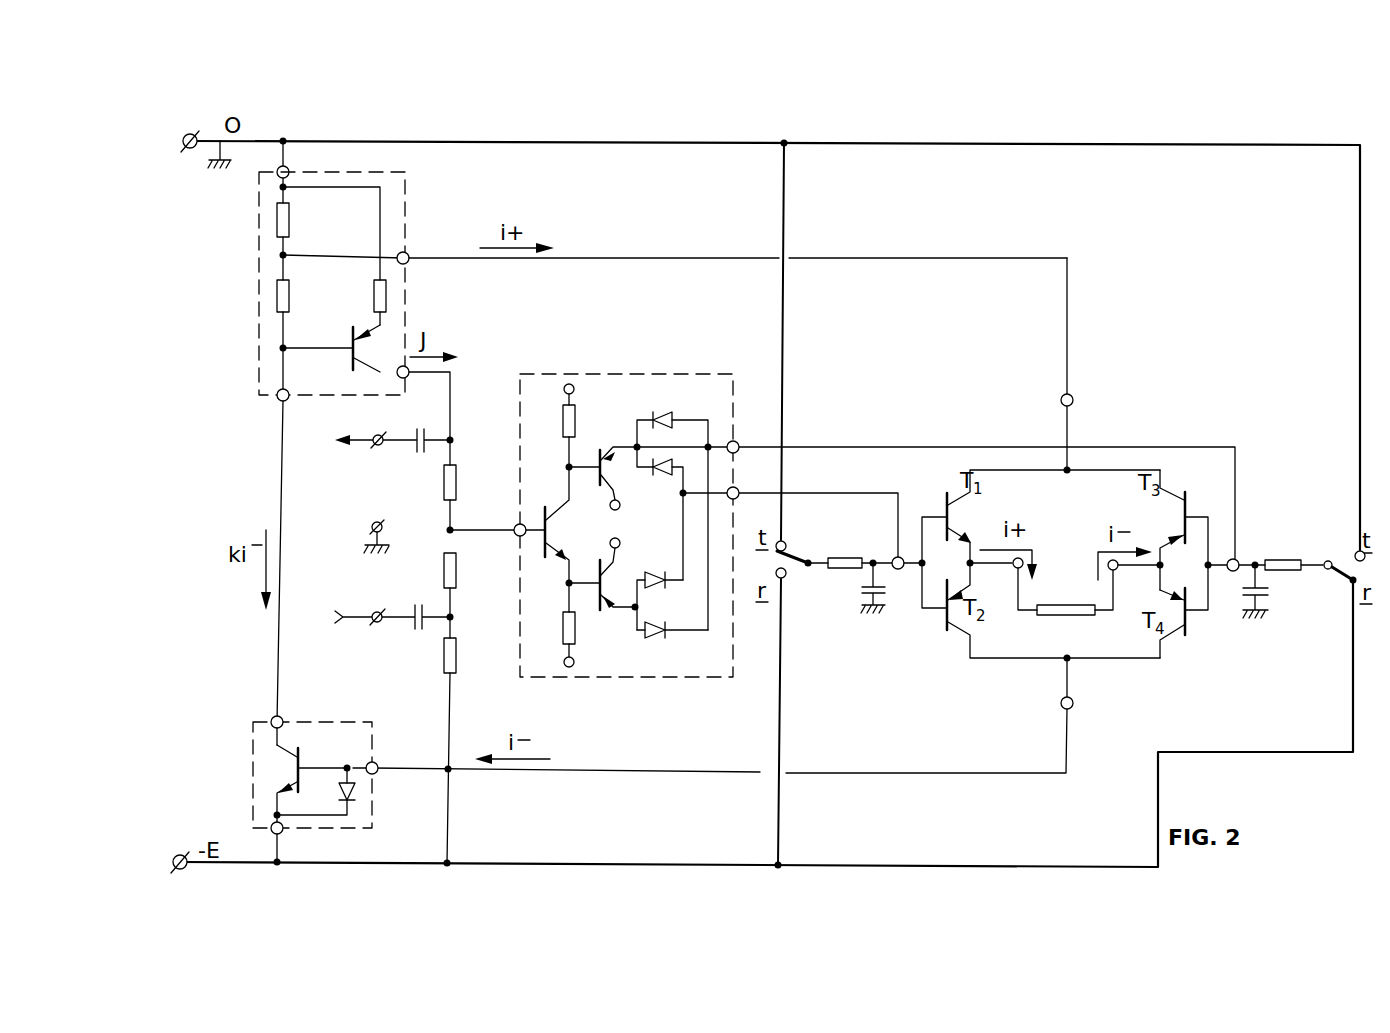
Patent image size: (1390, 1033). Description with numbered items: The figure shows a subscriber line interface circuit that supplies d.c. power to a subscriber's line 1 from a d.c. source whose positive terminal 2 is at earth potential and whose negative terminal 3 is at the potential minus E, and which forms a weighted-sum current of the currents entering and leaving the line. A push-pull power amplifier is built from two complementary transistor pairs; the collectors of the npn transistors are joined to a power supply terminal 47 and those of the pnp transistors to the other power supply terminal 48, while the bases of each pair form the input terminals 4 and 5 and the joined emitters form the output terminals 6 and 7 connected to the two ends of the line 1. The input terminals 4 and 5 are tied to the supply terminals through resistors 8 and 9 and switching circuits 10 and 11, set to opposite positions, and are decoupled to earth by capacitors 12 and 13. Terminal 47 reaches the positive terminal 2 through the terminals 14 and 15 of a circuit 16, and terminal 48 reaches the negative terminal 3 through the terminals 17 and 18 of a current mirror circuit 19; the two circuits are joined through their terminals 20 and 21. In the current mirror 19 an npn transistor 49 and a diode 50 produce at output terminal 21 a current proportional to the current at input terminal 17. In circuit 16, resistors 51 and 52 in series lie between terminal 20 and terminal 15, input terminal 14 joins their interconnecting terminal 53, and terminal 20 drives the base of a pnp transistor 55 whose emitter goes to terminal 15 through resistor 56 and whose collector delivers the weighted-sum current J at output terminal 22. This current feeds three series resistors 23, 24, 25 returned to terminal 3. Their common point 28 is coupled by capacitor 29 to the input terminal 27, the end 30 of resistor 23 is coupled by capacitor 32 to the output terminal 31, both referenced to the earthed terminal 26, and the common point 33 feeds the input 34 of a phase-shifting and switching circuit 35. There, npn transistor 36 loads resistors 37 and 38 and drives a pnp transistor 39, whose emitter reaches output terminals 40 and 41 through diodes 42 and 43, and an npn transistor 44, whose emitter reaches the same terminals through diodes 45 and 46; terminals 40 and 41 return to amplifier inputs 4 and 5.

The subscriber's line 1 is at (1068, 604).
The positive terminal 2 is at (190, 163).
The negative terminal 3 is at (184, 856).
The input terminal 4 is at (898, 570).
The input terminal 5 is at (1232, 572).
The output terminal 6 is at (1015, 570).
The output terminal 7 is at (1116, 570).
The resistor 8 is at (846, 558).
The resistor 9 is at (1282, 560).
The switching circuit 10 is at (790, 556).
The switching circuit 11 is at (1342, 582).
The capacitor 12 is at (862, 592).
The capacitor 13 is at (1268, 594).
The input terminal 14 is at (405, 252).
The power supply terminal 15 is at (296, 160).
The circuit 16 is at (405, 222).
The input terminal 17 is at (374, 762).
The power supply terminal 18 is at (280, 834).
The current mirror circuit 19 is at (312, 722).
The input terminal 20 is at (277, 398).
The output terminal 21 is at (279, 716).
The output terminal 22 is at (404, 378).
The resistor 23 is at (456, 486).
The resistor 24 is at (456, 578).
The resistor 25 is at (456, 666).
The terminal 26 is at (372, 527).
The input terminal 27 is at (374, 622).
The common point 28 is at (452, 617).
The coupling capacitor 29 is at (415, 608).
The end of resistor 30 is at (452, 440).
The output terminal 31 is at (378, 434).
The coupling capacitor 32 is at (392, 448).
The common point 33 is at (447, 531).
The input 34 is at (514, 528).
The phase-shifting and switching circuit 35 is at (618, 374).
The npn transistor 36 is at (550, 530).
The resistor 37 is at (563, 422).
The resistor 38 is at (563, 628).
The pnp transistor 39 is at (598, 455).
The output terminal 40 is at (734, 487).
The output terminal 41 is at (734, 441).
The diode 42 is at (660, 460).
The diode 43 is at (660, 413).
The npn transistor 44 is at (598, 600).
The diode 45 is at (660, 572).
The diode 46 is at (660, 625).
The power supply terminal 47 is at (1070, 395).
The power supply terminal 48 is at (1072, 705).
The npn transistor 49 is at (300, 757).
The diode 50 is at (358, 790).
The resistor 51 is at (277, 297).
The resistor 52 is at (277, 218).
The terminal 53 is at (285, 254).
The pnp transistor 55 is at (350, 357).
The resistor 56 is at (386, 296).